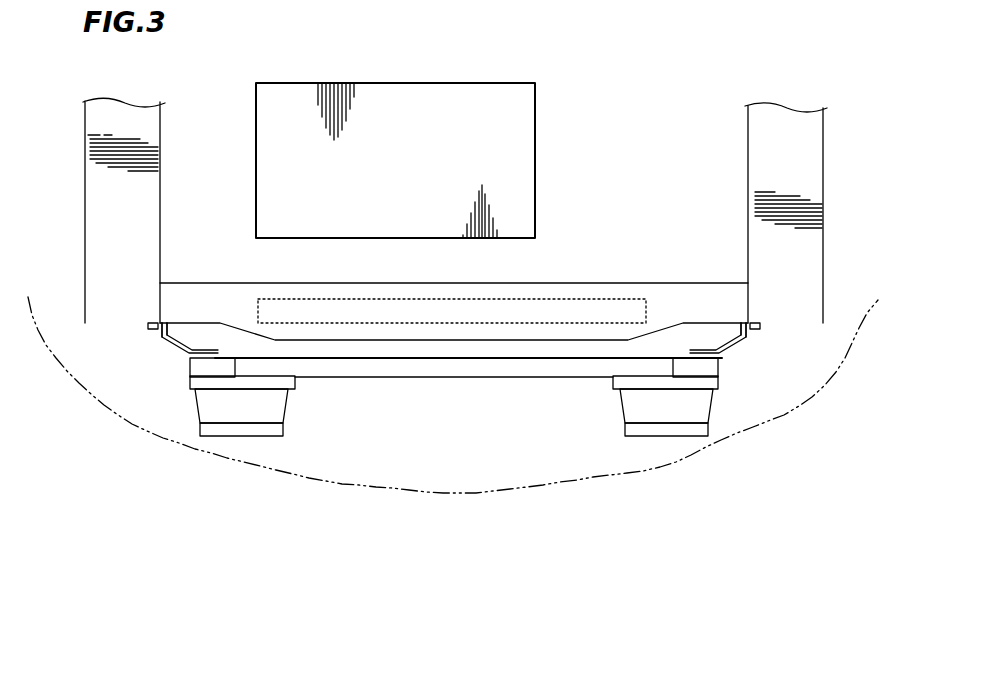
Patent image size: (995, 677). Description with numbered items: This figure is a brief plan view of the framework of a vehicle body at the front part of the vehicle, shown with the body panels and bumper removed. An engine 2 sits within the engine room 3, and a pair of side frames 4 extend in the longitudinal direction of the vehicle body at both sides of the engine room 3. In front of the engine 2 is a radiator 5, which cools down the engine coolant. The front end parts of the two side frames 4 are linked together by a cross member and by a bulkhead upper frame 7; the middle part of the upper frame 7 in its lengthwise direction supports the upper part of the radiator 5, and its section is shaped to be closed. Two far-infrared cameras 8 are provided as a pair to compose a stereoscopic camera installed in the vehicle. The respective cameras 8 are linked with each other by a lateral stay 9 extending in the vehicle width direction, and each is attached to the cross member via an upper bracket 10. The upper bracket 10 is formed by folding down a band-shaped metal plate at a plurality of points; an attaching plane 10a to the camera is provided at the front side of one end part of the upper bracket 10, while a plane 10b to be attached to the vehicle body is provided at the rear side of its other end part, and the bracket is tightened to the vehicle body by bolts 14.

The engine 2 is at (536, 143).
The engine room 3 is at (655, 126).
The side frames 4 is at (88, 183).
The radiator 5 is at (443, 325).
The bulkhead upper frame 7 is at (682, 292).
The far-infrared camera 8 is at (252, 432).
The lateral stay 9 is at (532, 370).
The upper bracket 10 is at (170, 340).
The attaching plane to the camera 10a is at (231, 358).
The plane to be attached to the vehicle body 10b is at (148, 326).
The bolts 14 is at (157, 330).